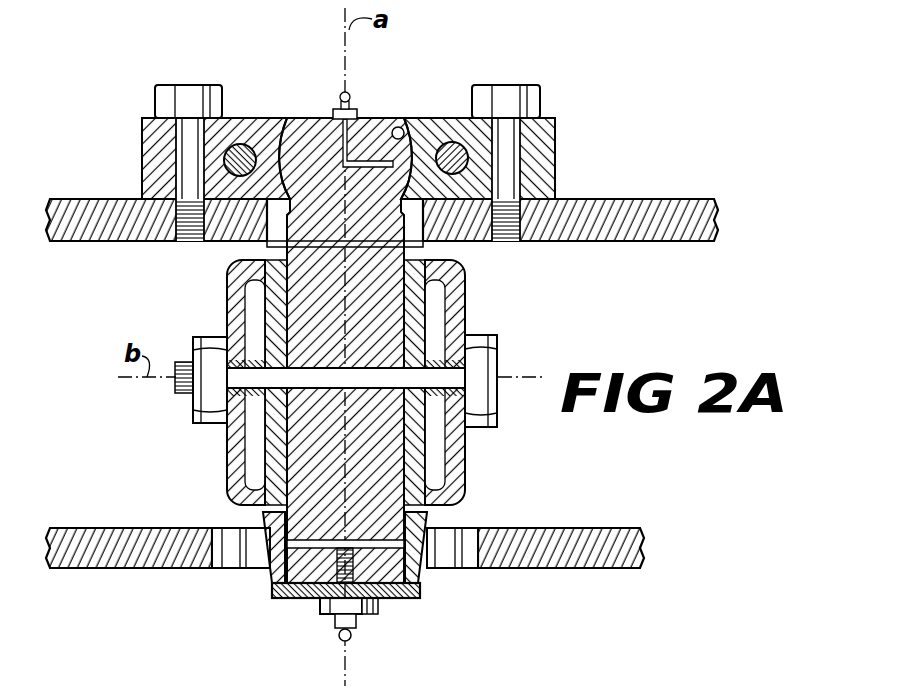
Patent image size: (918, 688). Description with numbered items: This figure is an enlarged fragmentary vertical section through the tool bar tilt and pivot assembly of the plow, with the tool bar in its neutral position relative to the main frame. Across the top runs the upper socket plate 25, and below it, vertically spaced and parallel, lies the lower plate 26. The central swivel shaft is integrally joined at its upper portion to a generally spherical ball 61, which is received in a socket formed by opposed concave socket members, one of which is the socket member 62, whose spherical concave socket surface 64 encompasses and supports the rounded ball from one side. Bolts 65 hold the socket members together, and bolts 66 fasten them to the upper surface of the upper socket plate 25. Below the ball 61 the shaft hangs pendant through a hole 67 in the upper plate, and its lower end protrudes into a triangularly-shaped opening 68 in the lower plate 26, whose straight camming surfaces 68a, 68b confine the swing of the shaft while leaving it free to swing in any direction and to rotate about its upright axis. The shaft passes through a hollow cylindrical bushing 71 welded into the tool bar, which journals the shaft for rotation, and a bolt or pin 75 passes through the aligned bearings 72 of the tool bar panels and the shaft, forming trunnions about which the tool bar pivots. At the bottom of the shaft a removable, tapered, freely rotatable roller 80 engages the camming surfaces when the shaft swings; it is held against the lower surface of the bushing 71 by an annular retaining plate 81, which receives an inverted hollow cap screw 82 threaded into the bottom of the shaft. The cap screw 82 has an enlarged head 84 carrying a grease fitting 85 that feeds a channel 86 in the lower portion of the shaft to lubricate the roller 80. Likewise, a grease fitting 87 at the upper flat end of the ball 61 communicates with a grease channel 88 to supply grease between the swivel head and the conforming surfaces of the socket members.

The upper socket plate 25 is at (592, 203).
The lower plate 26 is at (562, 532).
The spherical ball 61 is at (320, 132).
The socket member 62 is at (406, 135).
The socket surface 64 is at (448, 150).
The bolts 65 is at (262, 128).
The bolts 66 is at (158, 94).
The hole 67 is at (235, 250).
The triangularly-shaped opening 68 is at (465, 568).
The camming surface 68a is at (240, 568).
The camming surface 68b is at (455, 535).
The bushing 71 is at (236, 470).
The bearings 72 is at (256, 330).
The bolt or pin 75 is at (177, 390).
The roller 80 is at (276, 530).
The retaining plate 81 is at (282, 600).
The cap screw 82 is at (376, 612).
The enlarged head 84 is at (326, 614).
The grease fitting 85 is at (354, 641).
The channel 86 is at (320, 540).
The grease fitting 87 is at (351, 99).
The grease channel 88 is at (368, 162).